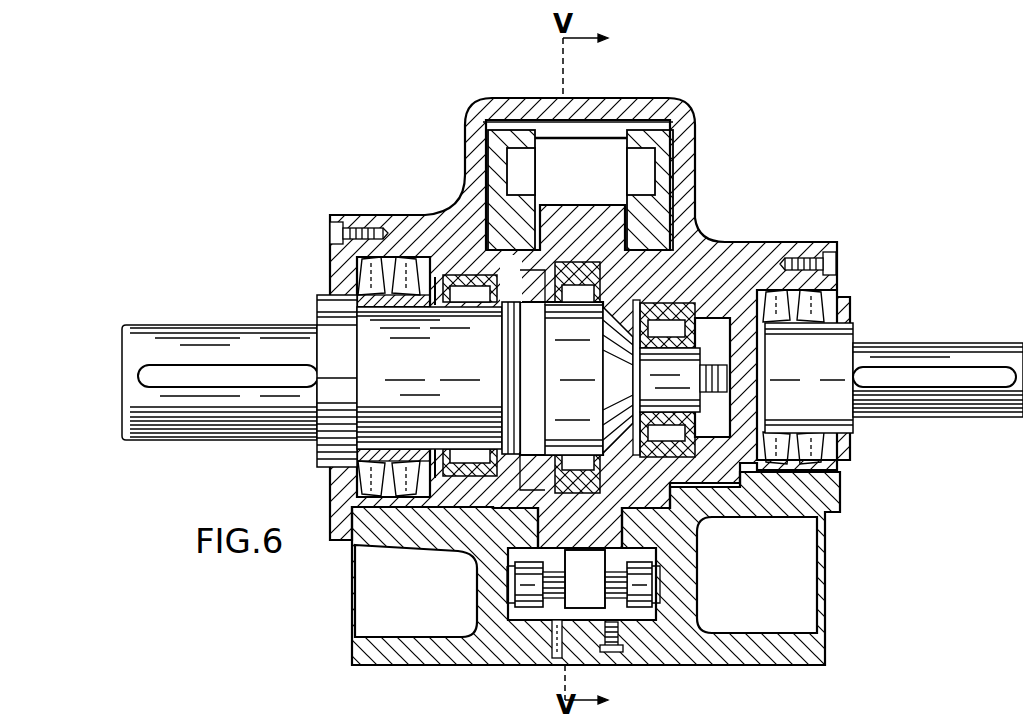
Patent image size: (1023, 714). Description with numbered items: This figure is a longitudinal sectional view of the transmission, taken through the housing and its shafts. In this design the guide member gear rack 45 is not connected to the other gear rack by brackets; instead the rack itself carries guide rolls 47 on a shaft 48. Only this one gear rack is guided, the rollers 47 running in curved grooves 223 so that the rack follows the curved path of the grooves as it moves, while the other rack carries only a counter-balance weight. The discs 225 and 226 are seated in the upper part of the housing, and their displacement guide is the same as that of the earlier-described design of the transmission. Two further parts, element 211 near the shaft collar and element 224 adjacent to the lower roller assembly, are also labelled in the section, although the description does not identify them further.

The disc 225 is at (497, 140).
The disc 226 is at (660, 138).
The collar 211 is at (548, 332).
The guide member gear rack 45 is at (585, 297).
The shaft 48 is at (613, 568).
The guide roll 47 is at (523, 578).
The curved groove 223 is at (523, 605).
The shaft portion 224 is at (653, 563).